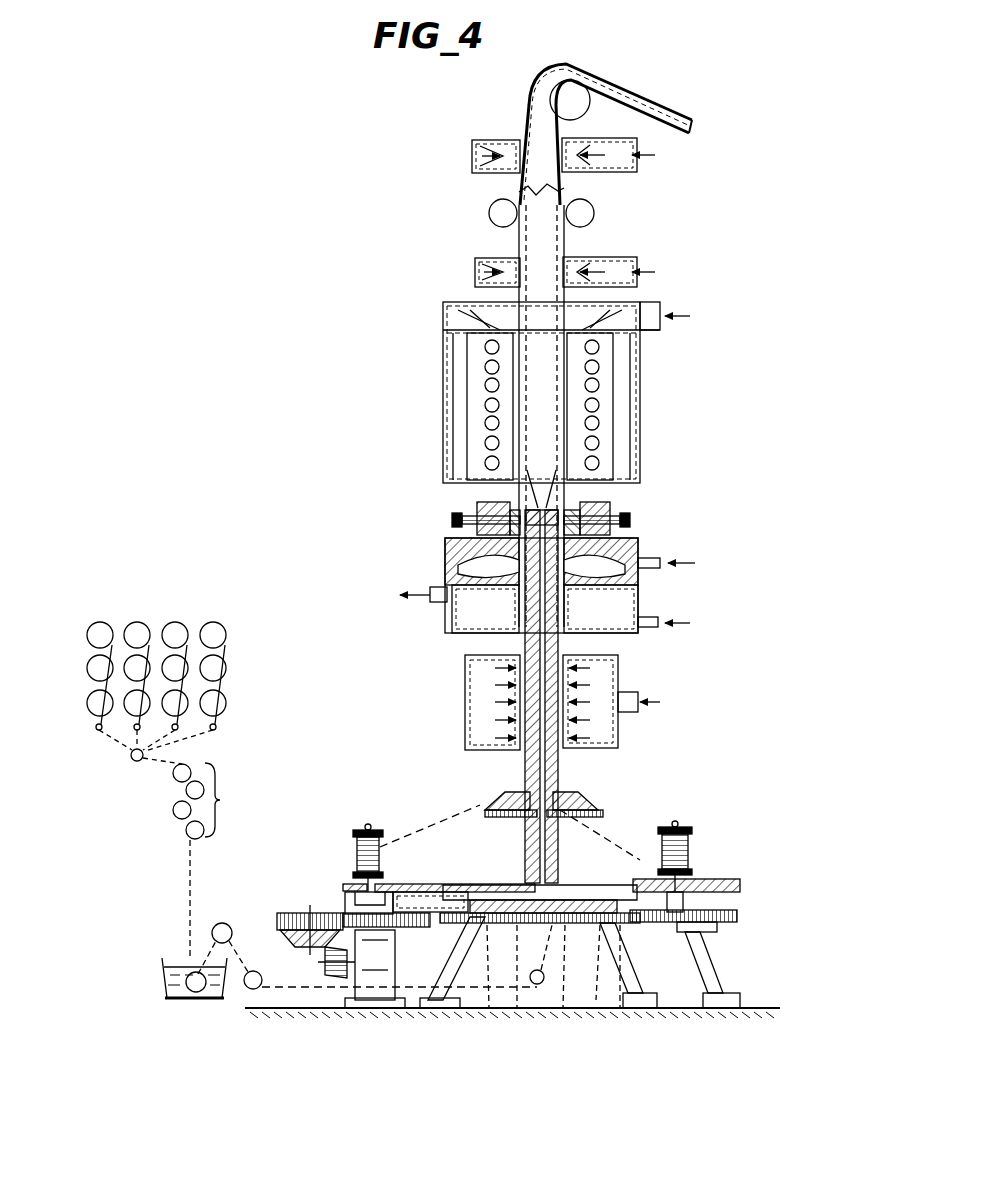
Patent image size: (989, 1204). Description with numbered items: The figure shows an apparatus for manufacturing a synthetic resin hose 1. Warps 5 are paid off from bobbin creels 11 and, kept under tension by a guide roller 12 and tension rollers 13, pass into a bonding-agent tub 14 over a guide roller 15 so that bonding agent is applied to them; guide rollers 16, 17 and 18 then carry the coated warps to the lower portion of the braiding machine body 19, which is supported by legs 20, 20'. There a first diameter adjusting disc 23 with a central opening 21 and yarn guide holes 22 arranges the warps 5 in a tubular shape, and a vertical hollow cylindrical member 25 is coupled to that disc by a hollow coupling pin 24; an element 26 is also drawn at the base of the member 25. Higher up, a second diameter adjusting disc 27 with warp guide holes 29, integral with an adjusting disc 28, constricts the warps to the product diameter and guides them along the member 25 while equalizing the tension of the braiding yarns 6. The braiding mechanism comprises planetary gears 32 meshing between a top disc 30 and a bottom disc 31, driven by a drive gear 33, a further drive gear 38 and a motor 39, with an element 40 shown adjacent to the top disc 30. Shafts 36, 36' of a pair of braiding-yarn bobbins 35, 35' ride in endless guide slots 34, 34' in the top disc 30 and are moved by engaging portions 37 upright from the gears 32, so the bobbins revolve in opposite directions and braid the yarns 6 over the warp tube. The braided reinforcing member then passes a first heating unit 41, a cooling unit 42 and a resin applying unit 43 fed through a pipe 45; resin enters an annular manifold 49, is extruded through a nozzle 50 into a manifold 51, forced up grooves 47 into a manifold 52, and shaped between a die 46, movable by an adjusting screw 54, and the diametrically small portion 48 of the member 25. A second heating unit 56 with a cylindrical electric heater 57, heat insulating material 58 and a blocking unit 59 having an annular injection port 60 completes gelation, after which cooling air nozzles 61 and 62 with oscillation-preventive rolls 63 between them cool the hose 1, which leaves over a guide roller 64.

The synthetic resin hose 1 is at (512, 240).
The warps 5 is at (489, 1010).
The braiding yarns 6 is at (443, 822).
The bobbin creels 11 is at (180, 627).
The guide roller 12 is at (147, 753).
The tension rollers 13 is at (221, 800).
The bonding-agent tub 14 is at (165, 993).
The guide roller 15 is at (197, 993).
The guide roller 16 is at (223, 923).
The guide roller 17 is at (254, 990).
The guide roller 18 is at (517, 1010).
The braiding machine body 19 is at (472, 888).
The legs 20 is at (554, 990).
The leg 20' is at (692, 1030).
The central opening 21 is at (562, 1010).
The yarn guide holes 22 is at (619, 1010).
The first diameter adjusting disc 23 is at (606, 940).
The hollow coupling pin 24 is at (565, 893).
The hollow cylindrical member 25 is at (560, 773).
The spindle drive 26 is at (560, 896).
The second diameter adjusting disc 27 is at (603, 812).
The adjusting disc 28 is at (583, 800).
The warp guide holes 29 is at (500, 800).
The top disc 30 is at (350, 883).
The bottom disc 31 is at (638, 921).
The gears 32 is at (420, 930).
The drive gear 33 is at (290, 912).
The endless guide slot 34 is at (510, 830).
The endless guide slot 34' is at (445, 772).
The braiding-yarn bobbin 35 is at (331, 820).
The braiding-yarn bobbin 35' is at (728, 826).
The shaft 36 is at (383, 831).
The shaft 36' is at (691, 843).
The engaging portions 37 is at (358, 905).
The drive gear 38 is at (332, 985).
The motor 39 is at (431, 1005).
The bearing housing 40 is at (443, 870).
The first heating unit 41 is at (625, 688).
The cooling unit 42 is at (630, 605).
The resin applying unit 43 is at (572, 581).
The pipe 45 is at (665, 568).
The die 46 is at (605, 497).
The grooves 47 is at (628, 540).
The diametrically small portion 48 is at (553, 507).
The annular manifold 49 is at (463, 568).
The nozzle 50 is at (585, 560).
The manifold 51 is at (458, 540).
The manifold 52 is at (500, 502).
The adjusting screw 54 is at (612, 508).
The second heating unit 56 is at (589, 365).
The cylindrical electric heater 57 is at (600, 365).
The heat insulating material 58 is at (632, 445).
The blocking unit 59 is at (662, 305).
The annular injection port 60 is at (620, 298).
The cooling air nozzle 61 is at (575, 258).
The cooling air nozzle 62 is at (597, 137).
The oscillation-preventive rolls 63 is at (592, 208).
The guide roller 64 is at (577, 92).